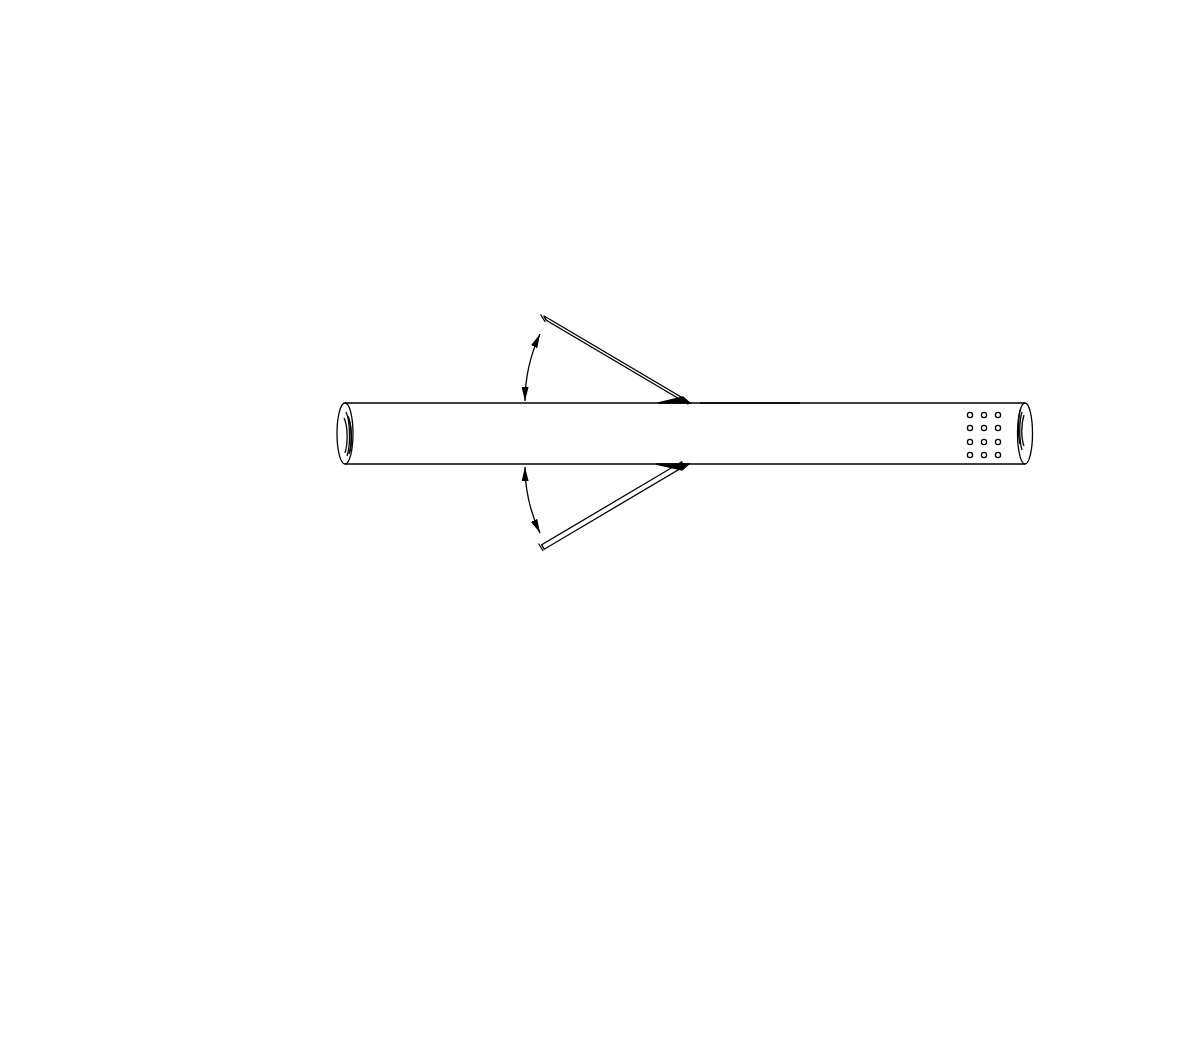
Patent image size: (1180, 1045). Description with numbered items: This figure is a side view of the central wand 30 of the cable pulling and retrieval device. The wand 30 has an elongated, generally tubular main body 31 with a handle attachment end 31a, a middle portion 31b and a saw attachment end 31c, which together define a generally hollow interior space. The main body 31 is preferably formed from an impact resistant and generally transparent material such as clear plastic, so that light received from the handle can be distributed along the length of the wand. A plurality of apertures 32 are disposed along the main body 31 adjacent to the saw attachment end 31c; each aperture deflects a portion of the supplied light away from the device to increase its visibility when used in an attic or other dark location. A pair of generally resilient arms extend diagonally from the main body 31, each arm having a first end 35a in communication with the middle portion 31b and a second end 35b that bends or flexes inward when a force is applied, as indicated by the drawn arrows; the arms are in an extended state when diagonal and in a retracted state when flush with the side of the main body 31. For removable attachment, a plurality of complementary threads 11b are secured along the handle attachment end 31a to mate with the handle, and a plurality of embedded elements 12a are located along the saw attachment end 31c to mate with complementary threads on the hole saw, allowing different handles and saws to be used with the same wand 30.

The central wand 30 is at (266, 124).
The main body 31 is at (385, 404).
The handle attachment end 31a is at (330, 409).
The middle portion 31b is at (744, 403).
The saw attachment end 31c is at (1038, 456).
The complementary threads 11b is at (340, 461).
The embedded elements 12a is at (1030, 410).
The apertures 32 is at (998, 409).
The first end of arm 35a is at (687, 466).
The second end of arm 35b is at (544, 316).